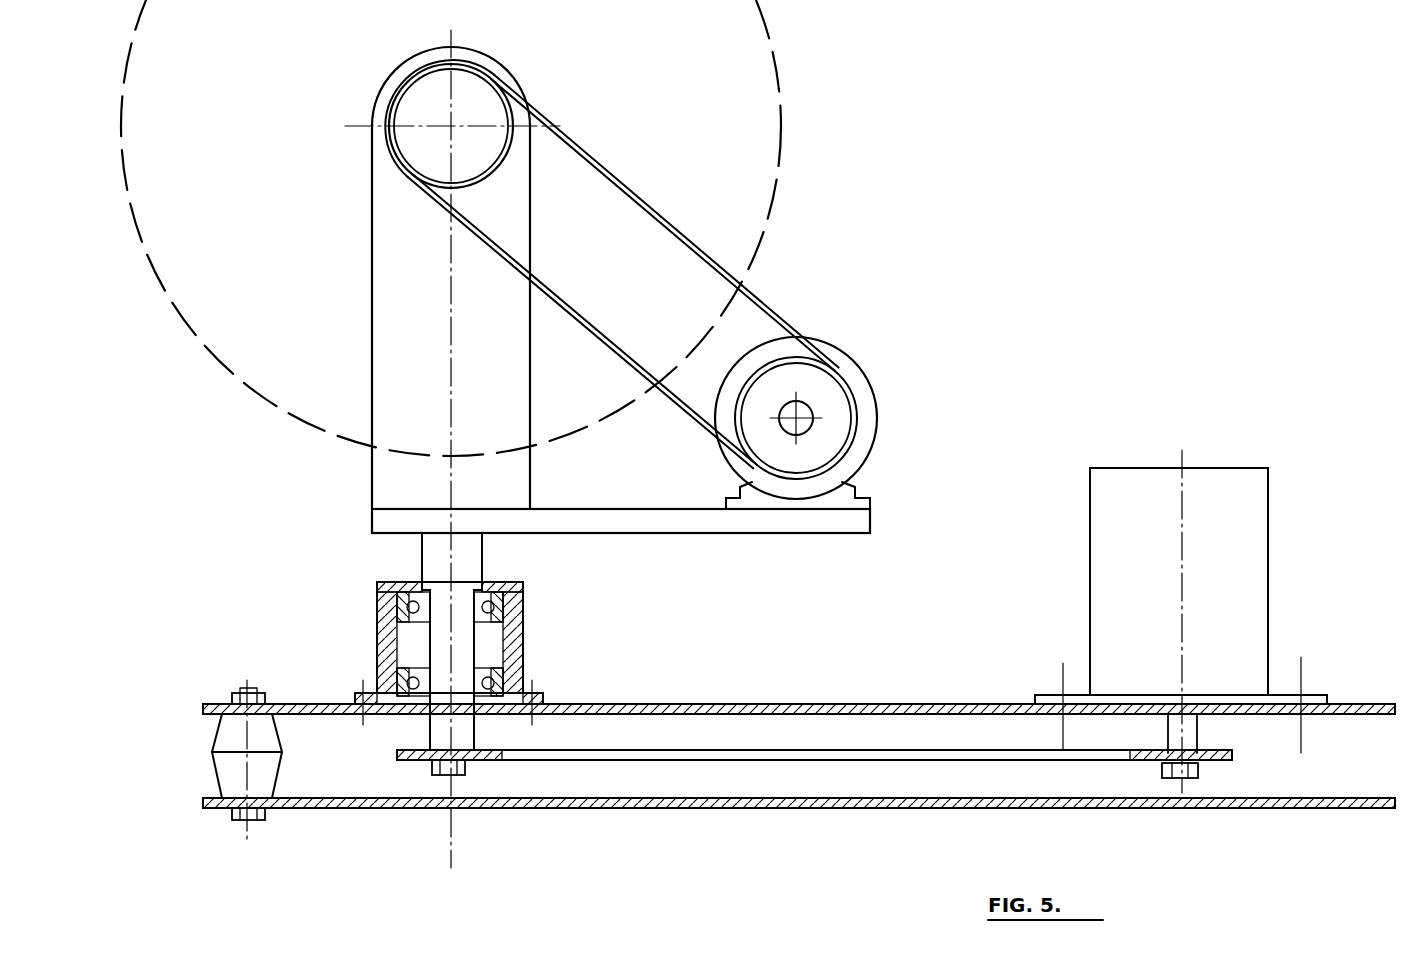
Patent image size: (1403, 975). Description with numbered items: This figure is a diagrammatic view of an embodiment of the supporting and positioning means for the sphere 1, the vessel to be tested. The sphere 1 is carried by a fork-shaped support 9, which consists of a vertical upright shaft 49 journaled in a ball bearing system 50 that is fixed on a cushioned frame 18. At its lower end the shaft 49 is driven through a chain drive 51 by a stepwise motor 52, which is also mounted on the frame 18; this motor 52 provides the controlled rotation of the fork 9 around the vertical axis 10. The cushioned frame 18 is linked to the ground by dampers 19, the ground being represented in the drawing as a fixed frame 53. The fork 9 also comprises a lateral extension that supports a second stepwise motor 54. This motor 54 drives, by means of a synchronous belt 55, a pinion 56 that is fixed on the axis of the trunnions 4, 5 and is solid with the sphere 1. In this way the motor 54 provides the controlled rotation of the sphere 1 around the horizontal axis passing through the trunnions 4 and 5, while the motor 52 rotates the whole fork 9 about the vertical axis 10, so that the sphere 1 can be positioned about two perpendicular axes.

The sphere 1 is at (780, 145).
The trunnion 4 is at (349, 126).
The trunnion 5 is at (451, 126).
The fork-shaped support 9 is at (362, 478).
The vertical axis 10 is at (440, 229).
The cushioned frame 18 is at (680, 712).
The dampers 19 is at (230, 768).
The vertical shaft 49 is at (455, 645).
The ball bearing system 50 is at (362, 630).
The chain drive 51 is at (710, 752).
The stepwise motor 52 is at (1076, 542).
The fixed frame 53 is at (800, 802).
The stepwise motor 54 is at (888, 391).
The synchronous belt 55 is at (578, 311).
The pinion 56 is at (512, 143).